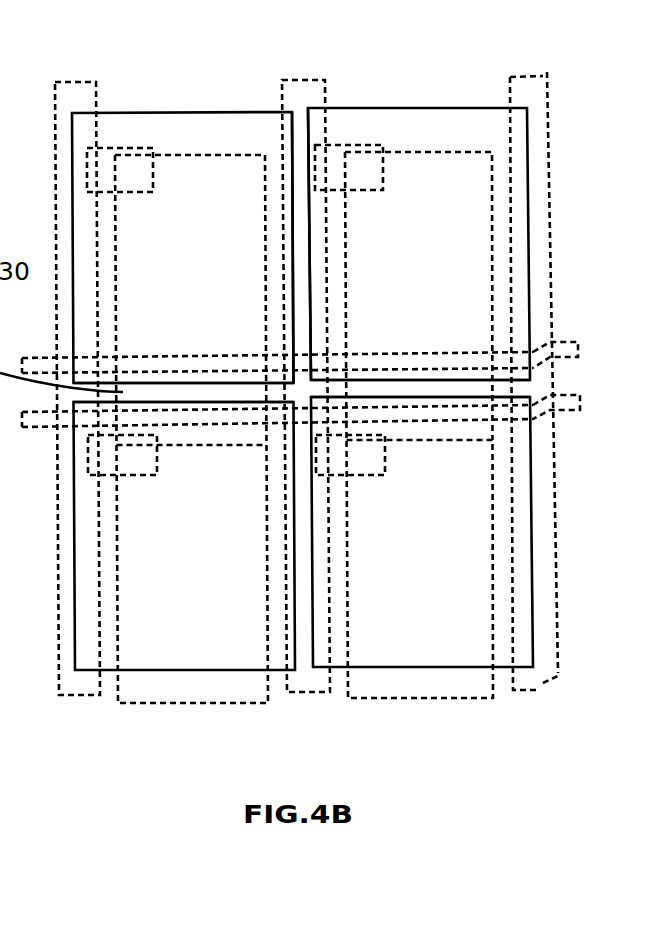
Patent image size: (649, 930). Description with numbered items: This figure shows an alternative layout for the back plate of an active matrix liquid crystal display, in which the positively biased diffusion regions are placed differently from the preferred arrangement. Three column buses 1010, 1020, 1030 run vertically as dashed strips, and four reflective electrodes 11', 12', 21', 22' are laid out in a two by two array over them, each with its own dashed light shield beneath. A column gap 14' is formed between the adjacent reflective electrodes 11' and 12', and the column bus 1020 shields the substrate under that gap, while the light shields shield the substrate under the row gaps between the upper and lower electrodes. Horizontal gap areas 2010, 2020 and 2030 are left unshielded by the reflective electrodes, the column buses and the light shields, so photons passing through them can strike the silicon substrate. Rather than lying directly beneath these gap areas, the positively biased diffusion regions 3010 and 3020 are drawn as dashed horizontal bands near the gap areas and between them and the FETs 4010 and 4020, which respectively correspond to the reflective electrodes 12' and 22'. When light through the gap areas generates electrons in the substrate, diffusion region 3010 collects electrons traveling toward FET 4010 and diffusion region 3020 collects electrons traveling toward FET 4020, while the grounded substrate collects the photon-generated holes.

The column bus 1010 is at (78, 97).
The column bus 1020 is at (296, 82).
The column bus 1030 is at (518, 90).
The column gap 14' is at (334, 201).
The reflective electrode 11' is at (183, 229).
The reflective electrode 12' is at (419, 227).
The FET 4010 is at (377, 178).
The FET 4020 is at (380, 463).
The gap area 2010 is at (277, 392).
The gap area 2020 is at (337, 390).
The third horizontal line 2030 is at (503, 387).
The positively biased diffusion region 3010 is at (435, 365).
The positively biased diffusion region 3020 is at (443, 412).
The reflective electrode 21' is at (185, 577).
The reflective electrode 22' is at (422, 575).